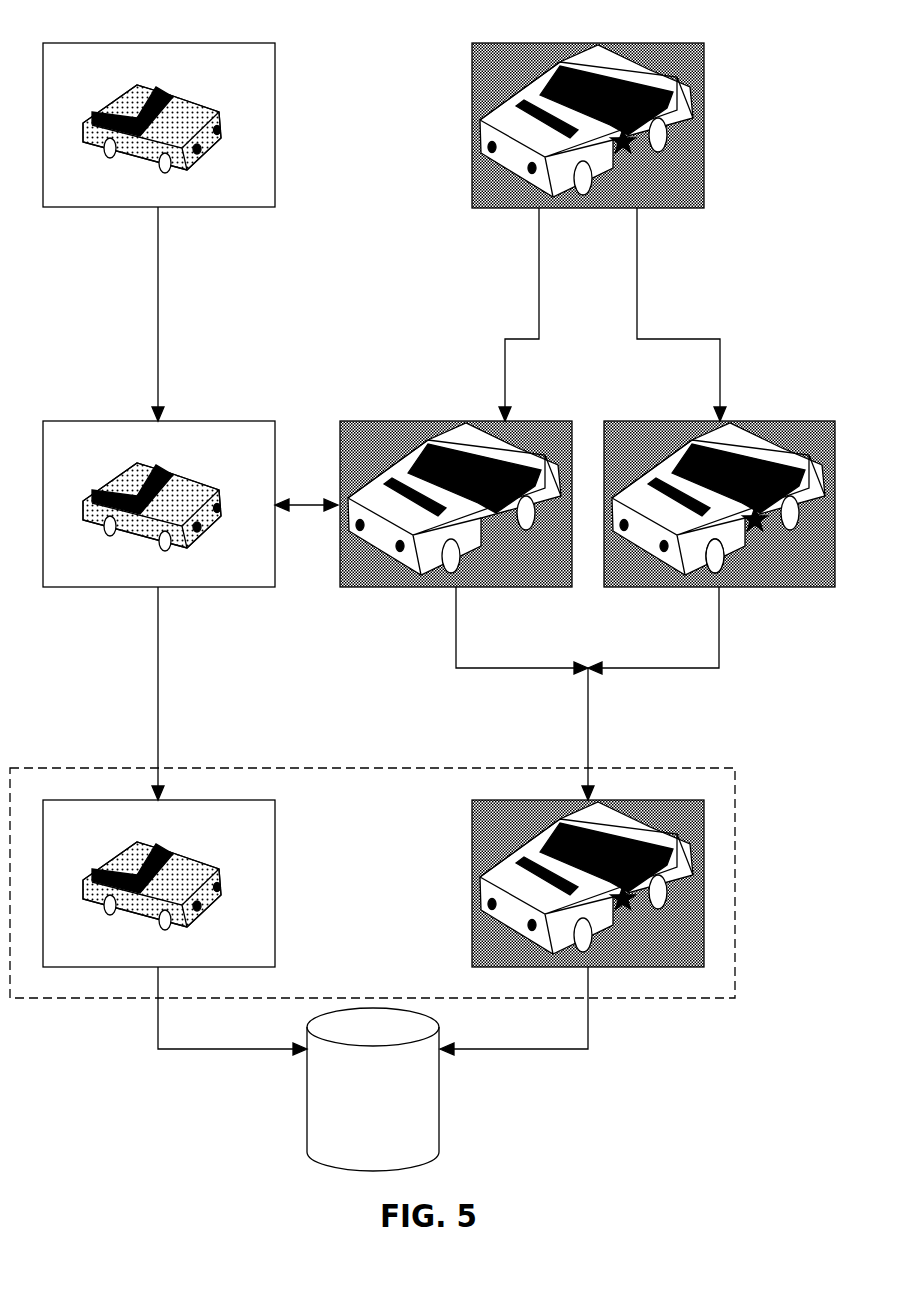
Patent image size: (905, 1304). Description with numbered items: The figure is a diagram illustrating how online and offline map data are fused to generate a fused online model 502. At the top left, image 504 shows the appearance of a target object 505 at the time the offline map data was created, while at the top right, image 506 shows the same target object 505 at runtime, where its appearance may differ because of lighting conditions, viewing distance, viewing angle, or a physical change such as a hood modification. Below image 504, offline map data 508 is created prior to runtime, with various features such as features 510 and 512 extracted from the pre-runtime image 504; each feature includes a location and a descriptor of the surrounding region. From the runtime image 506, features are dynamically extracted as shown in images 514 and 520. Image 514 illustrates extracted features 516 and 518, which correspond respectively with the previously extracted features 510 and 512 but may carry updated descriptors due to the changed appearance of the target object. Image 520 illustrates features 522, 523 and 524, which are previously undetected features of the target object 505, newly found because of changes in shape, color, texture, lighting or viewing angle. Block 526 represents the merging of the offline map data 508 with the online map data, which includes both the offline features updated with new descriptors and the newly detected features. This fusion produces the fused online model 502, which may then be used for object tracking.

The fused online model 502 is at (440, 1113).
The image 504 is at (275, 73).
The target object 505 is at (173, 102).
The image 506 is at (704, 60).
The offline map data 508 is at (192, 421).
The feature 510 is at (212, 507).
The feature 512 is at (203, 537).
The image 514 is at (383, 421).
The feature 516 is at (386, 514).
The feature 518 is at (363, 530).
The image 520 is at (778, 421).
The feature 522 is at (758, 531).
The feature 523 is at (662, 488).
The feature 524 is at (725, 553).
The block 526 is at (738, 800).